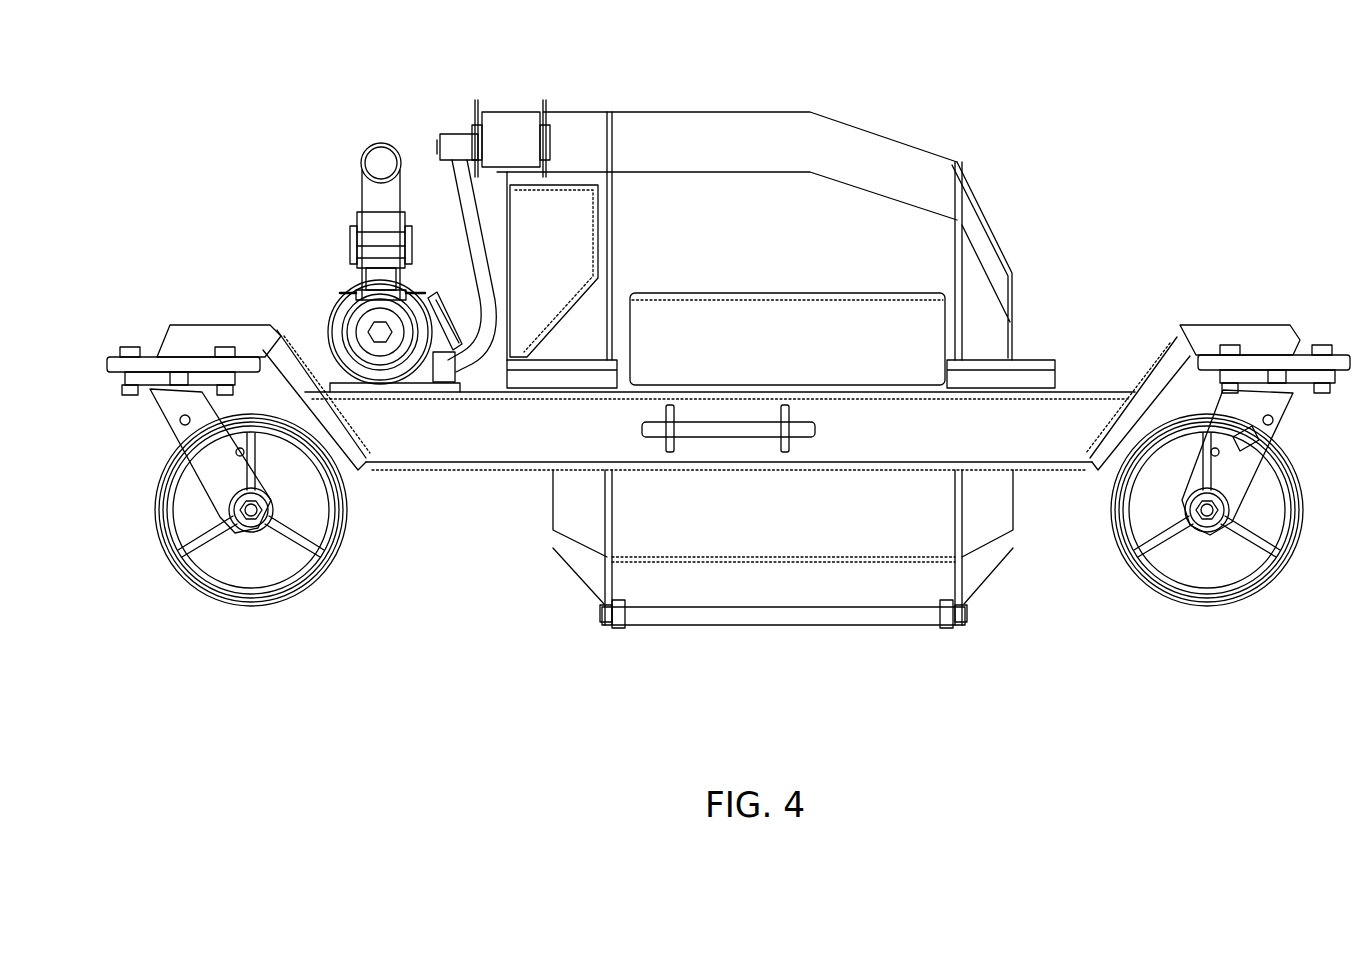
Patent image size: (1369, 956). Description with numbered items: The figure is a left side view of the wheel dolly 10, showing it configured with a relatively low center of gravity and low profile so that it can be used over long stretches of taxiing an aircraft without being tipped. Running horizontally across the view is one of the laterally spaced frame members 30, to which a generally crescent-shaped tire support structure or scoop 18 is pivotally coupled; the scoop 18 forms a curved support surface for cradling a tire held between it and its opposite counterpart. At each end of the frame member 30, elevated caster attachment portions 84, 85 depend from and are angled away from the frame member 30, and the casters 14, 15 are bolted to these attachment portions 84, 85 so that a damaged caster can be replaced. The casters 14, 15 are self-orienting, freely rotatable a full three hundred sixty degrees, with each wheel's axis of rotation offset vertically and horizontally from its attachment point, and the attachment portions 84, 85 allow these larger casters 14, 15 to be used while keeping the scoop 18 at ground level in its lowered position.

The wheel dolly 10 is at (738, 394).
The caster 14 is at (1233, 600).
The caster 15 is at (297, 583).
The tire support structure or scoop 18 is at (840, 140).
The frame member 30 is at (467, 450).
The caster attachment portion 84 is at (1270, 340).
The caster attachment portion 85 is at (177, 327).